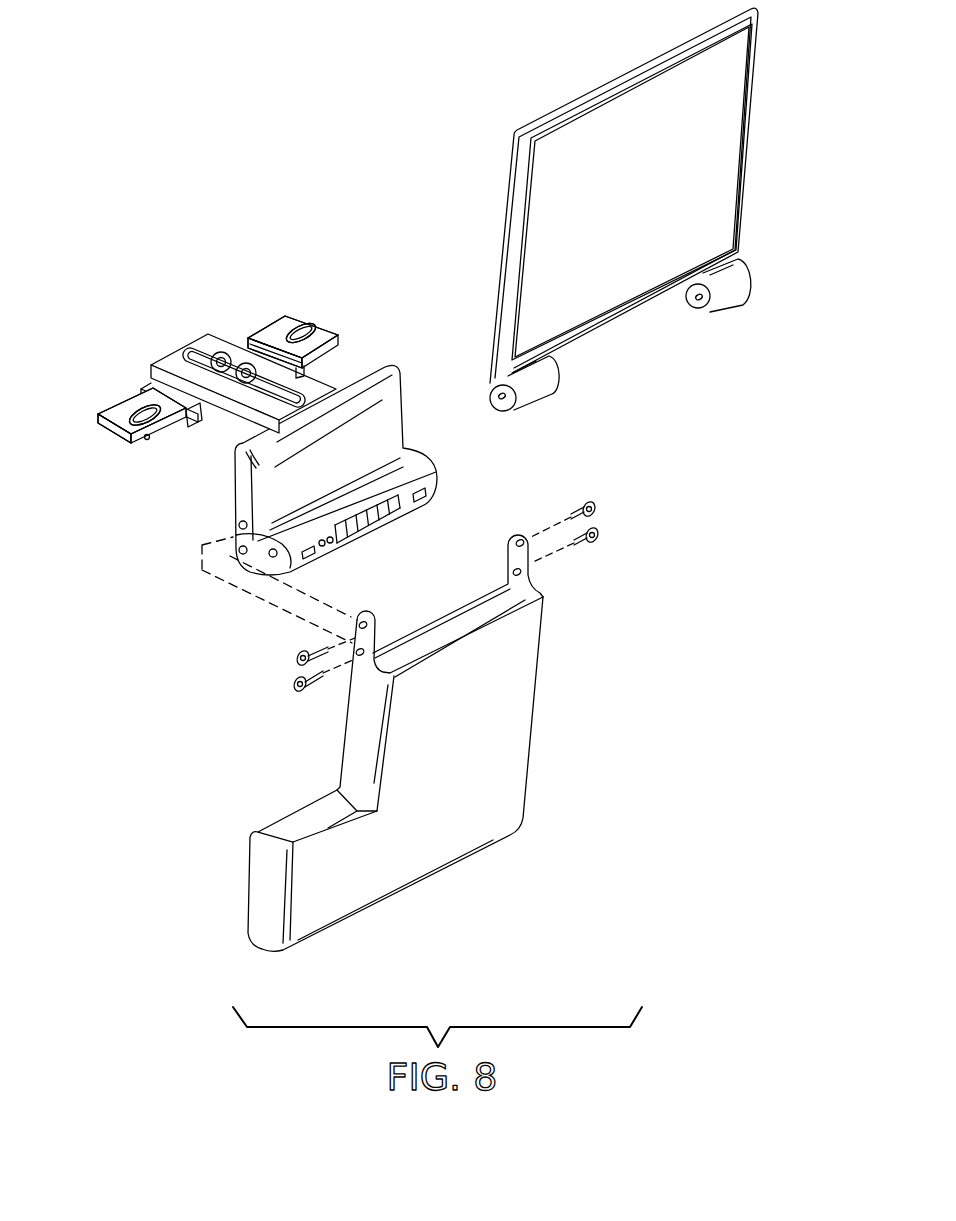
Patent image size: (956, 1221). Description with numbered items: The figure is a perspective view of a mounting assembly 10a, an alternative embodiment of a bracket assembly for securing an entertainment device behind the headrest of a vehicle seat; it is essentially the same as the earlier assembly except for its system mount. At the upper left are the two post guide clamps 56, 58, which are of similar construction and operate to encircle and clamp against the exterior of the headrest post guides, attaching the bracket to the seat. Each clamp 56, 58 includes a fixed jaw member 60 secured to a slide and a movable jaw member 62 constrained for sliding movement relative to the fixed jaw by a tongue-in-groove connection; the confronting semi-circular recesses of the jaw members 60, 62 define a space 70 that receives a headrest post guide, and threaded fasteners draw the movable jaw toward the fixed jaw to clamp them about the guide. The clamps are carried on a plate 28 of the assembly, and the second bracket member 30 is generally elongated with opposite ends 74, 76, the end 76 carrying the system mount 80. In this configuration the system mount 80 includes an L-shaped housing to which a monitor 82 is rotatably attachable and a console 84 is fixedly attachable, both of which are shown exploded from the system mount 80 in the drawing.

The mounting assembly 10a is at (236, 375).
The mounting plate 28 is at (230, 372).
The second bracket member 30 is at (226, 388).
The post guide clamp 56 is at (107, 422).
The post guide clamp 58 is at (307, 318).
The fixed jaw member 60 is at (263, 333).
The movable jaw member 62 is at (333, 327).
The space 70 is at (293, 321).
The end 74 is at (168, 365).
The end 76 is at (317, 383).
The system mount 80 is at (232, 486).
The monitor 82 is at (748, 128).
The console 84 is at (512, 724).